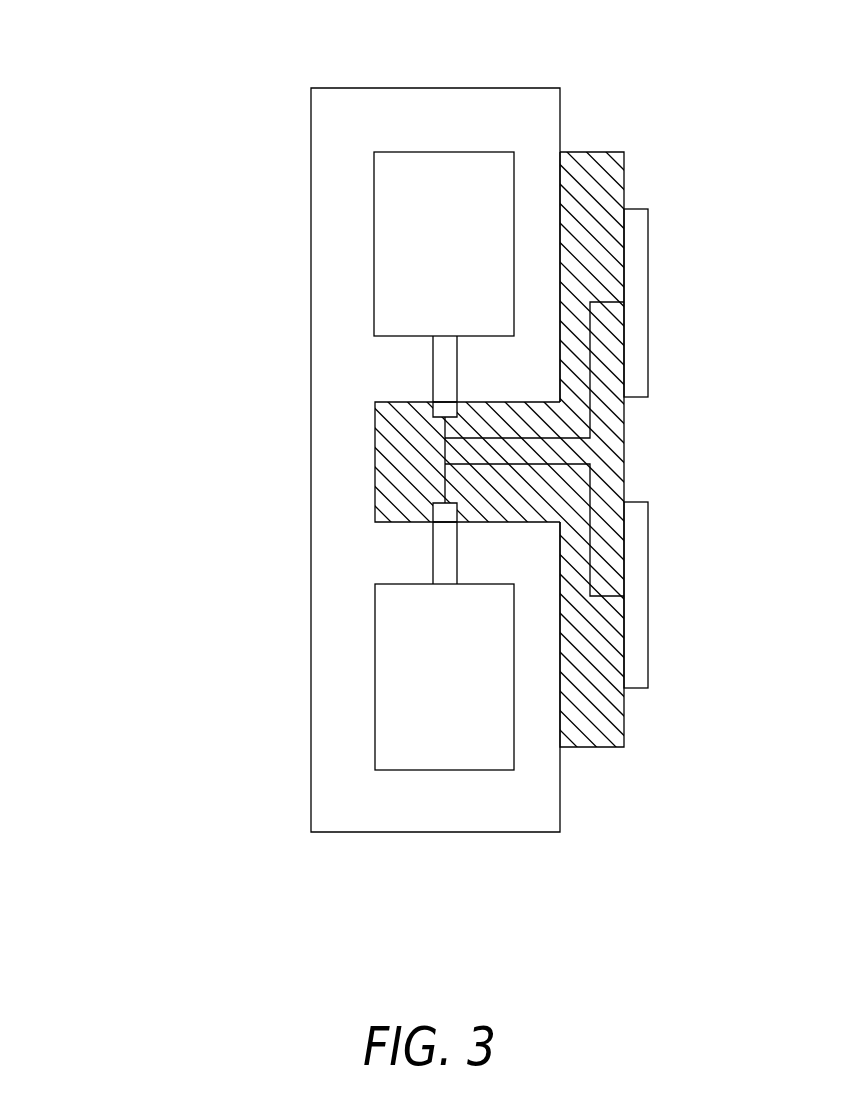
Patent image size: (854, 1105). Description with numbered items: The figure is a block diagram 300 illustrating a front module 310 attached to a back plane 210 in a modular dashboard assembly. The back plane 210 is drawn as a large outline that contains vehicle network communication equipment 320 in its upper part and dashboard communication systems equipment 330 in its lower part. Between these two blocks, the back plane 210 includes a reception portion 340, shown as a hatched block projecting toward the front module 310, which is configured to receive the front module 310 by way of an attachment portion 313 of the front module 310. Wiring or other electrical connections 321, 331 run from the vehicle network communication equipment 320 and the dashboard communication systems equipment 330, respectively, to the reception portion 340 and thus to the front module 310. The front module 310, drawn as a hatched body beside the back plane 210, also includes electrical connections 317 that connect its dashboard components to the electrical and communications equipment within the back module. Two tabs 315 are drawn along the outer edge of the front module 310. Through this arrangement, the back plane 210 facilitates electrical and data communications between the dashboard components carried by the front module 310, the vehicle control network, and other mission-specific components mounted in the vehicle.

The block diagram 300 is at (212, 128).
The back plane 210 is at (468, 88).
The front module 310 is at (623, 152).
The attachment portion 313 is at (524, 469).
The lead 315 is at (648, 260).
The electrical connections 317 is at (590, 423).
The vehicle network communication equipment 320 is at (398, 220).
The electrical connection 321 is at (432, 360).
The dashboard communication systems equipment 330 is at (398, 741).
The electrical connection 331 is at (433, 563).
The reception portion 340 is at (375, 522).